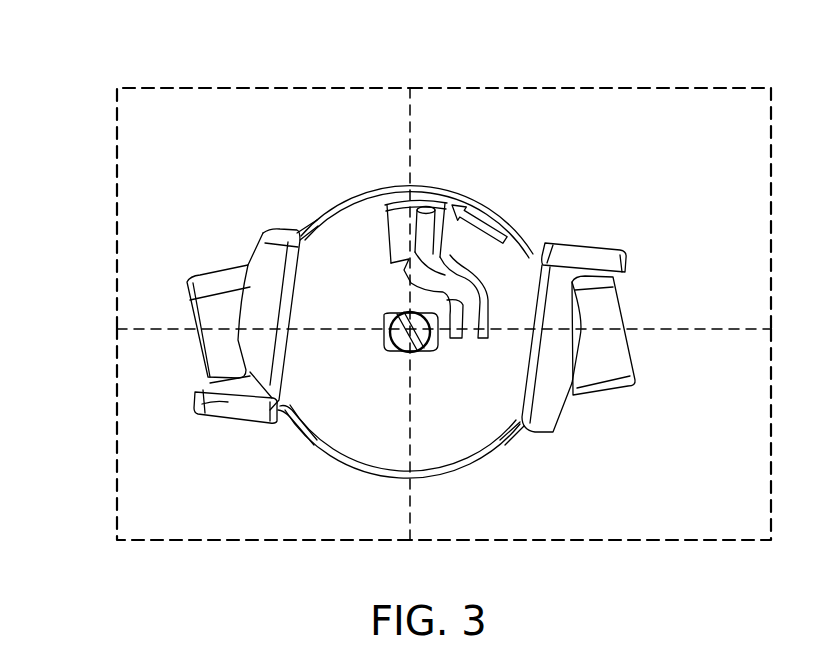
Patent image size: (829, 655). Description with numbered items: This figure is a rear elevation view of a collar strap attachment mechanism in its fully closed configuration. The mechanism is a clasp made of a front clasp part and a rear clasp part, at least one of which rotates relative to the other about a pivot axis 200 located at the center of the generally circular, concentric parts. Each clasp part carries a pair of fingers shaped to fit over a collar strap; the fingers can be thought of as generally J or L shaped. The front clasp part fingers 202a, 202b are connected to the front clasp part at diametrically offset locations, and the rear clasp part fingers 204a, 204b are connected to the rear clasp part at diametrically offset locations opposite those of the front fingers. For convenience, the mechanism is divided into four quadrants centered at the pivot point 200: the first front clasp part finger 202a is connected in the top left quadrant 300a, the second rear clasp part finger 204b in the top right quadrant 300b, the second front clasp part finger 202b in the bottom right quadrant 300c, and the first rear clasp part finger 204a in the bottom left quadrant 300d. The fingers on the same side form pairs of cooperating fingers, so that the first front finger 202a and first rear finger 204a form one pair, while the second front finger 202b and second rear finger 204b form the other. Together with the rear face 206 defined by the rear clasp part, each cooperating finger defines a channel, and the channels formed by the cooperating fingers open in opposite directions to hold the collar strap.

The top left quadrant 300a is at (171, 88).
The top right quadrant 300b is at (651, 88).
The bottom right quadrant 300c is at (617, 540).
The bottom left quadrant 300d is at (197, 540).
The pivot axis 200 is at (422, 349).
The first front clasp part finger 202a is at (225, 283).
The second front clasp part finger 202b is at (608, 357).
The first rear clasp part finger 204a is at (215, 400).
The second rear clasp part finger 204b is at (570, 248).
The rear face 206 is at (352, 243).